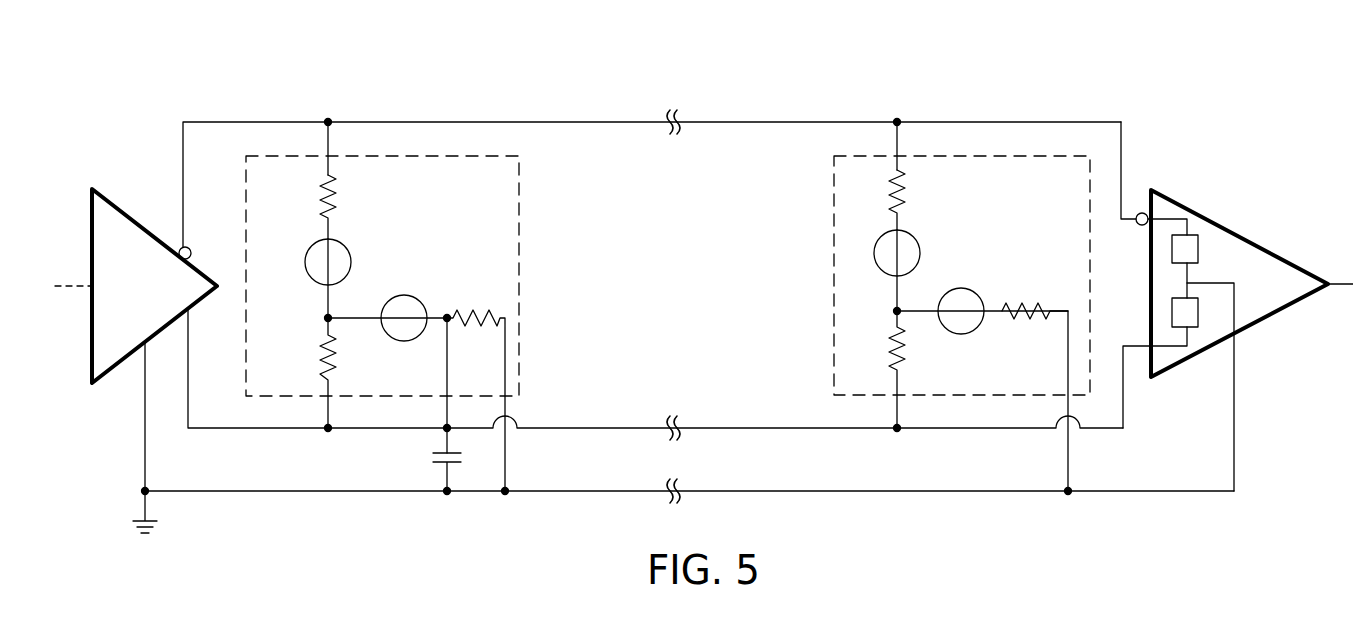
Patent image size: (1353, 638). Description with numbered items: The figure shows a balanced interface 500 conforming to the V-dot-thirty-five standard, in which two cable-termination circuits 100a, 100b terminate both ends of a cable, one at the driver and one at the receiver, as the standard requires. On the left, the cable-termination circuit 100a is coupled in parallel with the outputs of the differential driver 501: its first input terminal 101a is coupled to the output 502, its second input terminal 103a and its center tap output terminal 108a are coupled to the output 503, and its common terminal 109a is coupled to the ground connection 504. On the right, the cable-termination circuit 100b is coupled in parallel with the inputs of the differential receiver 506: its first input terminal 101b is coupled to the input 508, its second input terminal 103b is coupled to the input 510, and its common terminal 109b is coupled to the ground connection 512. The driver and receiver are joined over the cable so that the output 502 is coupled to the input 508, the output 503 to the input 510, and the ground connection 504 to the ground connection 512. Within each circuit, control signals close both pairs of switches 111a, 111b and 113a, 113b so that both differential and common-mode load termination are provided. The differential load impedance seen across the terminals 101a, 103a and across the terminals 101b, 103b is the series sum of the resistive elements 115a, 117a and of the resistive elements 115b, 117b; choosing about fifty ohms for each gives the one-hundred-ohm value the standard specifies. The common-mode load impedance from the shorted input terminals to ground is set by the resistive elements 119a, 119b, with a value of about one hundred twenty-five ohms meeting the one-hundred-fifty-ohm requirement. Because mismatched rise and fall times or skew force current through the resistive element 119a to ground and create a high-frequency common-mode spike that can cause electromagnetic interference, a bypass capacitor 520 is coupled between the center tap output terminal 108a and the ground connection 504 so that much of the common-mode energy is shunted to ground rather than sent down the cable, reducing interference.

The differential signaling system 500 is at (803, 80).
The V.35 differential driver 501 is at (121, 210).
The output 502 is at (200, 120).
The output 503 is at (216, 430).
The ground connection 504 is at (143, 432).
The V.35 differential receiver 506 is at (1262, 246).
The input 508 is at (1125, 133).
The input 510 is at (1127, 415).
The ground connection 512 is at (1236, 395).
The bypass capacitor 520 is at (462, 455).
The cable-termination circuit 100a is at (533, 222).
The cable-termination circuit 100b is at (824, 220).
The first input terminal 101a is at (328, 119).
The first input terminal 101b is at (897, 120).
The second input terminal 103a is at (332, 432).
The second input terminal 103b is at (900, 432).
The center tap output terminal 108a is at (445, 431).
The common terminal 109a is at (508, 495).
The common terminal 109b is at (1070, 495).
The switch 111a is at (376, 230).
The switch 111b is at (892, 280).
The switch 113a is at (394, 296).
The switch 113b is at (968, 288).
The resistive element 115a is at (342, 176).
The resistive element 115b is at (908, 188).
The resistive element 117a is at (340, 368).
The resistive element 117b is at (910, 360).
The resistive element 119a is at (482, 310).
The resistive element 119b is at (1032, 306).